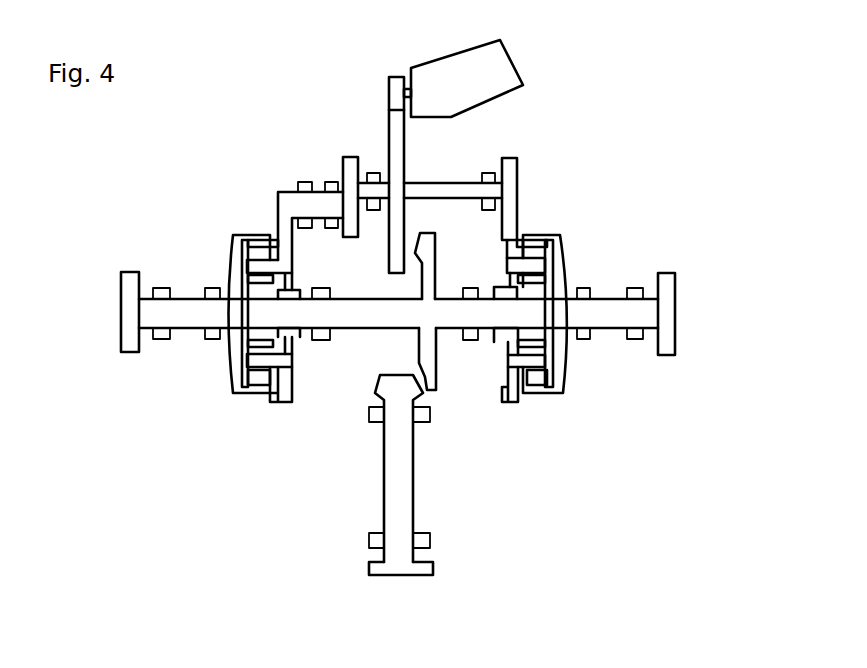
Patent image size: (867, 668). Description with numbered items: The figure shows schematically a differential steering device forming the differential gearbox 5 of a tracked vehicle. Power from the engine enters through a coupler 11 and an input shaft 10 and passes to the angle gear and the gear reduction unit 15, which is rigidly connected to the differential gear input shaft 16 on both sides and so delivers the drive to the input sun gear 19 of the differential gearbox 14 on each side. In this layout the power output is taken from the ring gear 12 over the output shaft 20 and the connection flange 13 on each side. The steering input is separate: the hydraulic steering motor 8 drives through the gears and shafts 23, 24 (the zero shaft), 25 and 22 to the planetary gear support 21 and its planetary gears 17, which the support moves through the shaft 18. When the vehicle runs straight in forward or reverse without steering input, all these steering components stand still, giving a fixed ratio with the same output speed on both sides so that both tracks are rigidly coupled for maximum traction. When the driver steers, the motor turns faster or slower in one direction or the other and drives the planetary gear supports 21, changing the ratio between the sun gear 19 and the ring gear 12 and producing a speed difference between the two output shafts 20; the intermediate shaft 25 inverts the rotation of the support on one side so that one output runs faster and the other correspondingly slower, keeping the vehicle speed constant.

The differential gearbox 5 is at (560, 92).
The hydraulic steering motor 8 is at (445, 78).
The input shaft 10 is at (398, 472).
The coupler 11 is at (396, 571).
The ring gear 12 is at (568, 385).
The connection flange 13 is at (121, 290).
The differential gearbox 14 is at (300, 483).
The gear reduction unit 15 is at (430, 378).
The differential gear input shaft 16 is at (360, 322).
The planetary gears 17 is at (257, 383).
The shaft 18 is at (252, 362).
The sun gear 19 is at (257, 303).
The output shaft 20 is at (188, 320).
The planetary gear support 21 is at (508, 232).
The gear/shaft of steering train 22 is at (510, 172).
The gear/shaft of steering train 23 is at (389, 88).
The zero shaft 24 is at (443, 183).
The intermediate shaft 25 is at (323, 212).